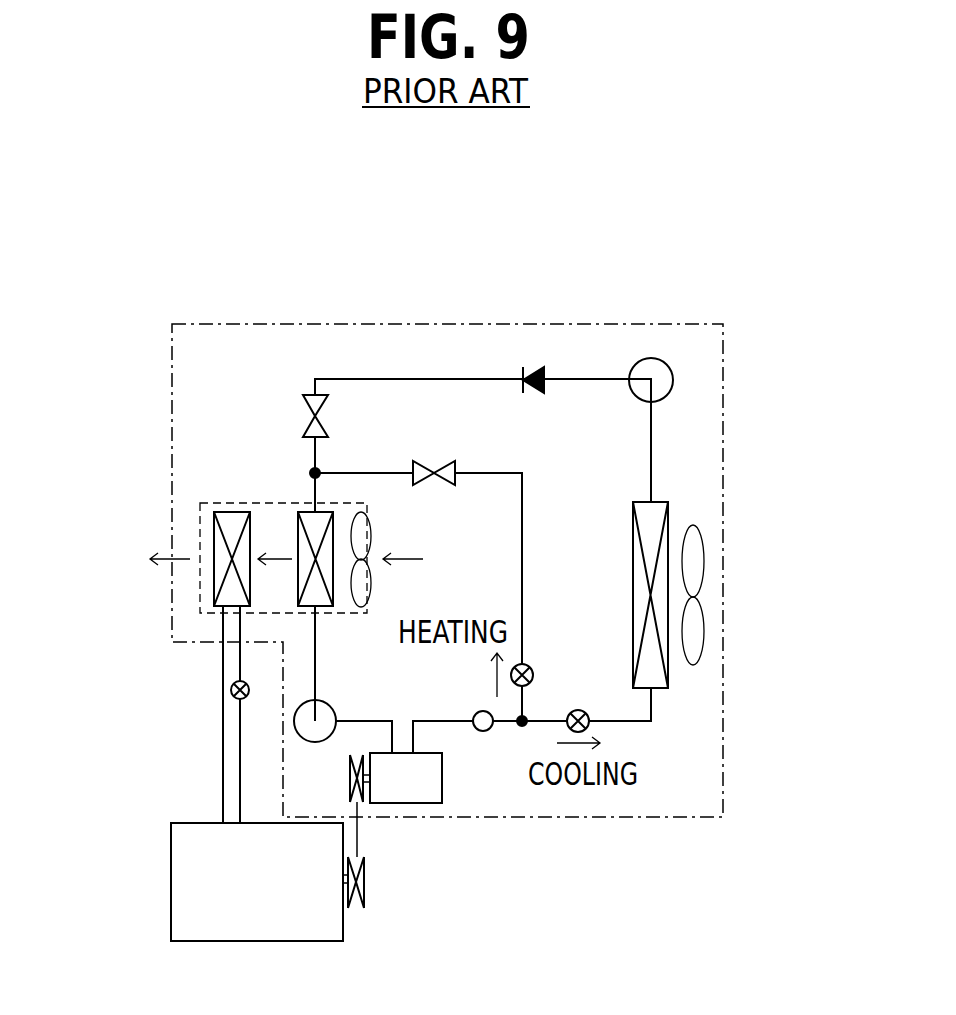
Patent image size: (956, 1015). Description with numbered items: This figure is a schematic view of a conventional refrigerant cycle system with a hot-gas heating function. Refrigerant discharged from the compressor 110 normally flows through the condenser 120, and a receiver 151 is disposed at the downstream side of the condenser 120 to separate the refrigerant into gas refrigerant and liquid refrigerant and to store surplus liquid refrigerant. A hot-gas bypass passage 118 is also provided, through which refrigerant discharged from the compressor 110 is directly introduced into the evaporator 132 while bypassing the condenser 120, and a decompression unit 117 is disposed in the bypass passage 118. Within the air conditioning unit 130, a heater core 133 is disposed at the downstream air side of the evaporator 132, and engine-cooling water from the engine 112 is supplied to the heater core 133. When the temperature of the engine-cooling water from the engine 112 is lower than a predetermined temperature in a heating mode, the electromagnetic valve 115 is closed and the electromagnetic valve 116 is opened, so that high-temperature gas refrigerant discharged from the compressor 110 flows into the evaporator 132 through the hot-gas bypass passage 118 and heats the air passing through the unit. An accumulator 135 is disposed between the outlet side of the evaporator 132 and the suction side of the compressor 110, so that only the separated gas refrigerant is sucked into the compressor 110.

The compressor 110 is at (428, 803).
The engine 112 is at (258, 941).
The electromagnetic valve 115 is at (588, 729).
The electromagnetic valve 116 is at (531, 667).
The decompression unit 117 is at (448, 465).
The hot-gas bypass passage 118 is at (523, 490).
The condenser 120 is at (668, 507).
The air conditioning unit 130 is at (232, 503).
The evaporator 132 is at (307, 505).
The heater core 133 is at (214, 514).
The accumulator 135 is at (350, 700).
The receiver 151 is at (652, 358).